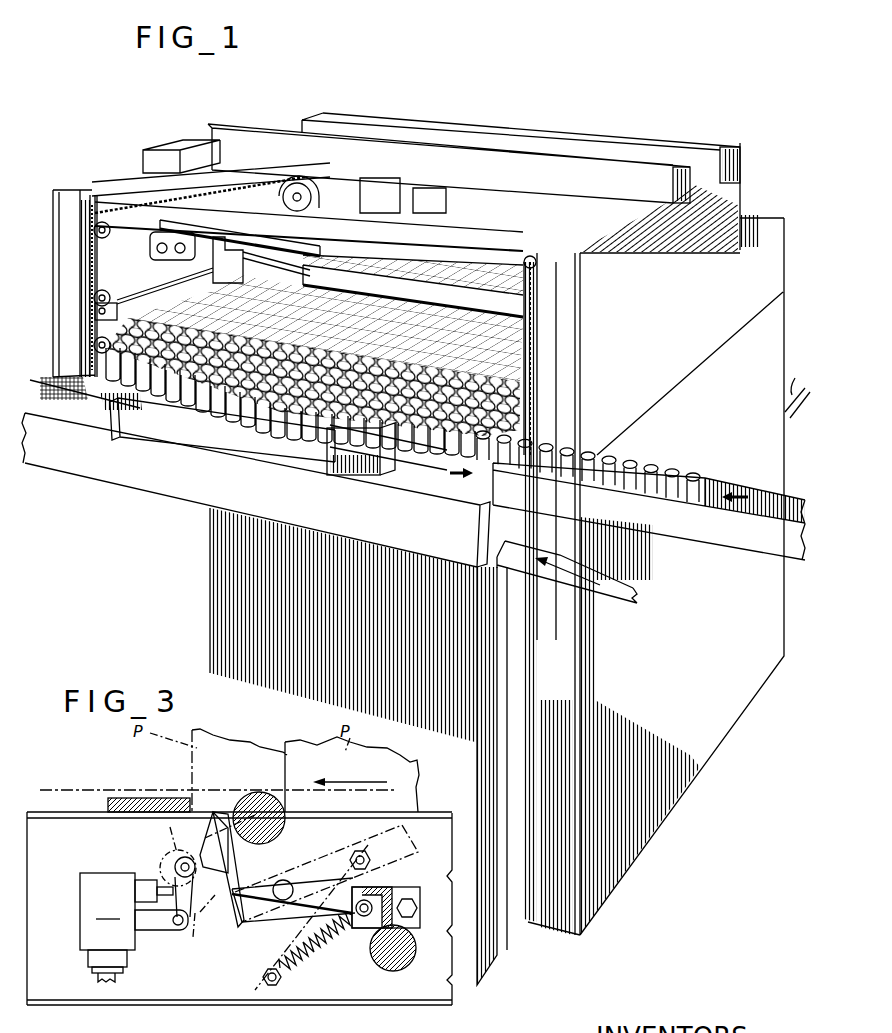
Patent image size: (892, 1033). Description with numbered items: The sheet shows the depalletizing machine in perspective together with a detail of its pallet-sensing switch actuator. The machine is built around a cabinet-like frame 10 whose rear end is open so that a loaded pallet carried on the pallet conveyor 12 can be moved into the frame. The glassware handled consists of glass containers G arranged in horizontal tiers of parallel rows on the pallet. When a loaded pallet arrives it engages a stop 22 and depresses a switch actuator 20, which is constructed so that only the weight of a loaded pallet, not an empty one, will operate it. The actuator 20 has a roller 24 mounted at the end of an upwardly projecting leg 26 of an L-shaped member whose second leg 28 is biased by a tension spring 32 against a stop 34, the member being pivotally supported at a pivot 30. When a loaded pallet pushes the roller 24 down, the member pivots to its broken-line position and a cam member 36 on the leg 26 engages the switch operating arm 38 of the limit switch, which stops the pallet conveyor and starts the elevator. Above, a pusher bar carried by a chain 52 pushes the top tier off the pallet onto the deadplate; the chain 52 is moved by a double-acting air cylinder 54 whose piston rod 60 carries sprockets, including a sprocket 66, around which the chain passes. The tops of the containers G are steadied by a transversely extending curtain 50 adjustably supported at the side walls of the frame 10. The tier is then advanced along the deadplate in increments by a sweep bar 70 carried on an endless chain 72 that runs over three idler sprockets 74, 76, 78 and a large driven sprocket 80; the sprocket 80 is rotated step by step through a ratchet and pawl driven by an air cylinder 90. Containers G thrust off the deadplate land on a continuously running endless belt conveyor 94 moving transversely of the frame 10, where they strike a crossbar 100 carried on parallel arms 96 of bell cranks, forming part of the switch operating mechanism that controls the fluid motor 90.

In FIG. 1, the cabinet-like frame 10 is at (695, 713).
In FIG. 1, the pallet conveyor 12 is at (797, 387).
In FIG. 3, the switch actuator 20 is at (259, 775).
In FIG. 3, the stop 22 is at (134, 798).
In FIG. 3, the roller 24 is at (286, 830).
In FIG. 3, the upwardly projecting leg 26 is at (268, 848).
In FIG. 3, the second leg 28 is at (405, 842).
In FIG. 3, the pivot 30 is at (278, 903).
In FIG. 3, the tension spring 32 is at (280, 942).
In FIG. 3, the stop 34 is at (388, 967).
In FIG. 3, the cam member 36 is at (217, 843).
In FIG. 3, the switch operating arm 38 is at (175, 863).
In FIG. 1, the curtain 50 is at (370, 347).
In FIG. 1, the chain 52 is at (92, 298).
In FIG. 1, the double-acting air cylinder 54 is at (235, 284).
In FIG. 1, the piston rod 60 is at (182, 278).
In FIG. 1, the sprocket 66 is at (98, 312).
In FIG. 1, the sweep bar 70 is at (455, 238).
In FIG. 1, the chain 72 is at (92, 262).
In FIG. 1, the idler sprocket 74 is at (252, 266).
In FIG. 1, the idler sprocket 76 is at (93, 348).
In FIG. 1, the idler sprocket 78 is at (92, 241).
In FIG. 1, the driven sprocket 80 is at (300, 186).
In FIG. 1, the air cylinder 90 is at (207, 250).
In FIG. 1, the conveyor 94 is at (95, 397).
In FIG. 1, the parallel arms 96 is at (243, 462).
In FIG. 1, the crossbar 100 is at (333, 483).
In FIG. 1, the glass containers G is at (149, 331).